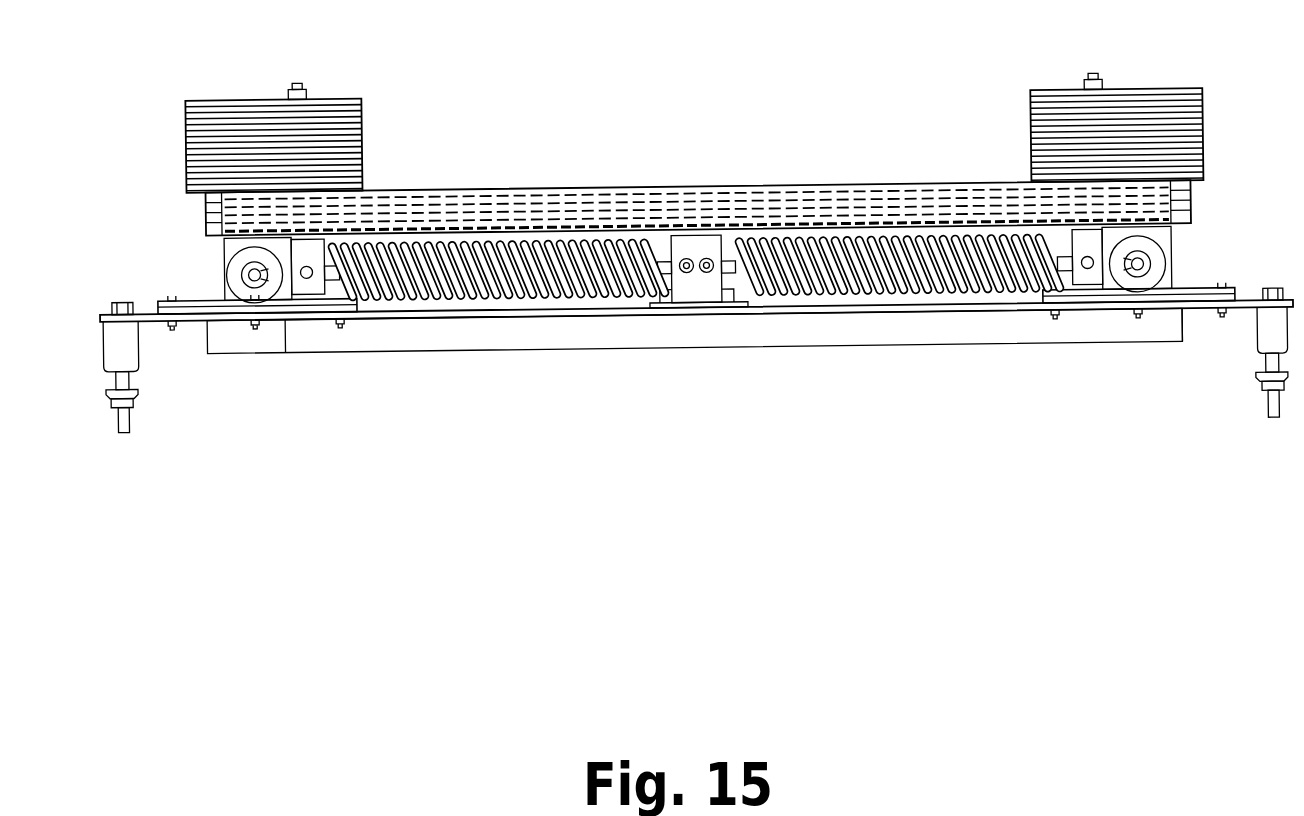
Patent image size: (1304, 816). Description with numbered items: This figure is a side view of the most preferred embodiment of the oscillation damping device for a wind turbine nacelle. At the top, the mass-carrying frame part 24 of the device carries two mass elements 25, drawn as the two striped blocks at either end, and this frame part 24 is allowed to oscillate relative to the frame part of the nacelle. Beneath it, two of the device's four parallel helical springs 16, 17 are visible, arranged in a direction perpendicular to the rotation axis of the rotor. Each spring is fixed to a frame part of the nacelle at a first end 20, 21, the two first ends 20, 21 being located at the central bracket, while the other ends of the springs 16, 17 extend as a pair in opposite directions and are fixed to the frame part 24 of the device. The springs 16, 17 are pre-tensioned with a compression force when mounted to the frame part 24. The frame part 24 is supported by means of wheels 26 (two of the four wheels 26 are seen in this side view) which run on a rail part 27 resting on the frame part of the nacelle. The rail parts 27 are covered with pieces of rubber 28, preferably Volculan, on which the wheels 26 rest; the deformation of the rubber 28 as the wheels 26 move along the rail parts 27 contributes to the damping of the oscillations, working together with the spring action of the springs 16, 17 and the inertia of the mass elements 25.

The helical spring 16 is at (542, 300).
The helical spring 17 is at (901, 297).
The first end 20 is at (684, 283).
The first end 21 is at (713, 283).
The mass-carrying frame part 24 is at (893, 203).
The mass element 25 is at (237, 117).
The wheel 26 is at (274, 288).
The rail part 27 is at (212, 318).
The piece of rubber 28 is at (193, 306).